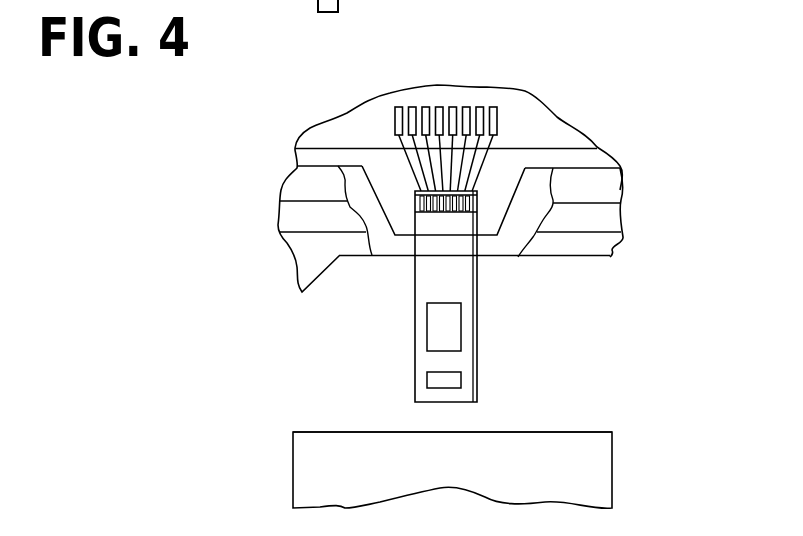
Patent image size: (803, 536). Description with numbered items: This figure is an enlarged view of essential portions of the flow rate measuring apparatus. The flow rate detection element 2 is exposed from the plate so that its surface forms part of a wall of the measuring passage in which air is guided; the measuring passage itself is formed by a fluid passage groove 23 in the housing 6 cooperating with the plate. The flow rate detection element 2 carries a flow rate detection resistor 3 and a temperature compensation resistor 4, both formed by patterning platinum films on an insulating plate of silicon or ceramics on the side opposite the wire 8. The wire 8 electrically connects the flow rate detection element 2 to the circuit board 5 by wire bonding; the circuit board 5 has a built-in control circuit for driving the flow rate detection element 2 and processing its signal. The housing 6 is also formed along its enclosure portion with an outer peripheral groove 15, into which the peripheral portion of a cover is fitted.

The flow rate detection element 2 is at (479, 315).
The flow rate detection resistor 3 is at (438, 328).
The temperature compensation resistor 4 is at (438, 382).
The circuit board 5 is at (532, 122).
The housing 6 is at (603, 183).
The wire 8 is at (497, 170).
The outer peripheral groove 15 is at (603, 218).
The fluid passage groove 23 is at (500, 432).